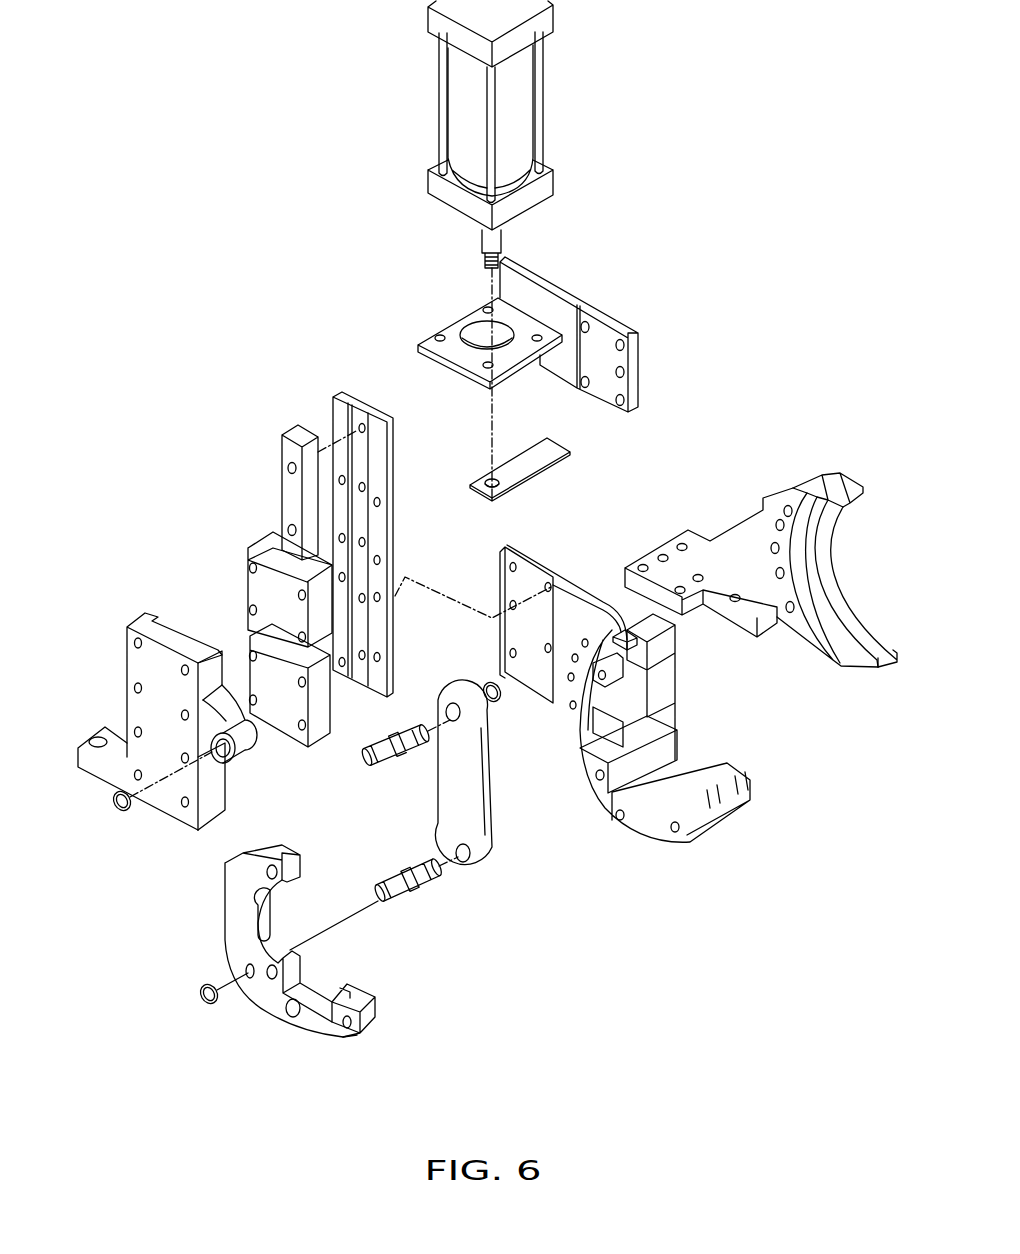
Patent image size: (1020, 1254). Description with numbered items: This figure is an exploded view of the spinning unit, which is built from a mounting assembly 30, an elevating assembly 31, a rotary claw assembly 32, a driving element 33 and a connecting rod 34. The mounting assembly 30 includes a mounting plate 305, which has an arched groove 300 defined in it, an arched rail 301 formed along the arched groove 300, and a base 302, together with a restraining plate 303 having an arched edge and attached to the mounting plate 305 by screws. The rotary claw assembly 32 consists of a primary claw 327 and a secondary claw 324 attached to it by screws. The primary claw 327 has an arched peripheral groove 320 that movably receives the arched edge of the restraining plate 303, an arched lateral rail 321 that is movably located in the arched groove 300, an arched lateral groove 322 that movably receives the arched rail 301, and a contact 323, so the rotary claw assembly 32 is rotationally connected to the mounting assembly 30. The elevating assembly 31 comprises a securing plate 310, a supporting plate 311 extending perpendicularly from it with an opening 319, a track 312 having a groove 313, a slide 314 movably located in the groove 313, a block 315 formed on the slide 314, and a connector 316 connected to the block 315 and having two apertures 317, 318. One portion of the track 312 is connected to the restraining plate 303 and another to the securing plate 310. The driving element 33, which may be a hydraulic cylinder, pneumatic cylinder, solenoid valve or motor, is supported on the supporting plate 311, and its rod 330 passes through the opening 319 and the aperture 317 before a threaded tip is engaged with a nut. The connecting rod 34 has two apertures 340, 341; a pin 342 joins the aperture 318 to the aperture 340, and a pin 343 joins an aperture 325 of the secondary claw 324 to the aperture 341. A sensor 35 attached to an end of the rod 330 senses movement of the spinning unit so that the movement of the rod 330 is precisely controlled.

The driving element 33 is at (465, 88).
The rod 330 is at (500, 240).
The supporting plate 311 is at (462, 321).
The opening 319 is at (477, 347).
The securing plate 310 is at (563, 315).
The sensor 35 is at (548, 455).
The track 312 is at (383, 420).
The groove 313 is at (363, 458).
The slide 314 is at (290, 493).
The block 315 is at (258, 588).
The elevating assembly 31 is at (132, 608).
The connector 316 is at (170, 802).
The aperture 317 is at (100, 735).
The aperture 318 is at (232, 754).
The connecting rod 34 is at (458, 783).
The aperture 340 is at (460, 702).
The aperture 341 is at (470, 868).
The pin 342 is at (390, 758).
The pin 343 is at (403, 890).
The secondary claw 324 is at (268, 994).
The aperture 325 is at (248, 970).
The base 302 is at (722, 582).
The mounting plate 305 is at (755, 543).
The arched groove 300 is at (836, 486).
The arched rail 301 is at (867, 490).
The mounting assembly 30 is at (820, 678).
The restraining plate 303 is at (570, 600).
The arched lateral rail 321 is at (643, 613).
The arched peripheral groove 320 is at (637, 637).
The arched lateral groove 322 is at (677, 630).
The primary claw 327 is at (663, 757).
The contact 323 is at (650, 797).
The rotary claw assembly 32 is at (660, 858).